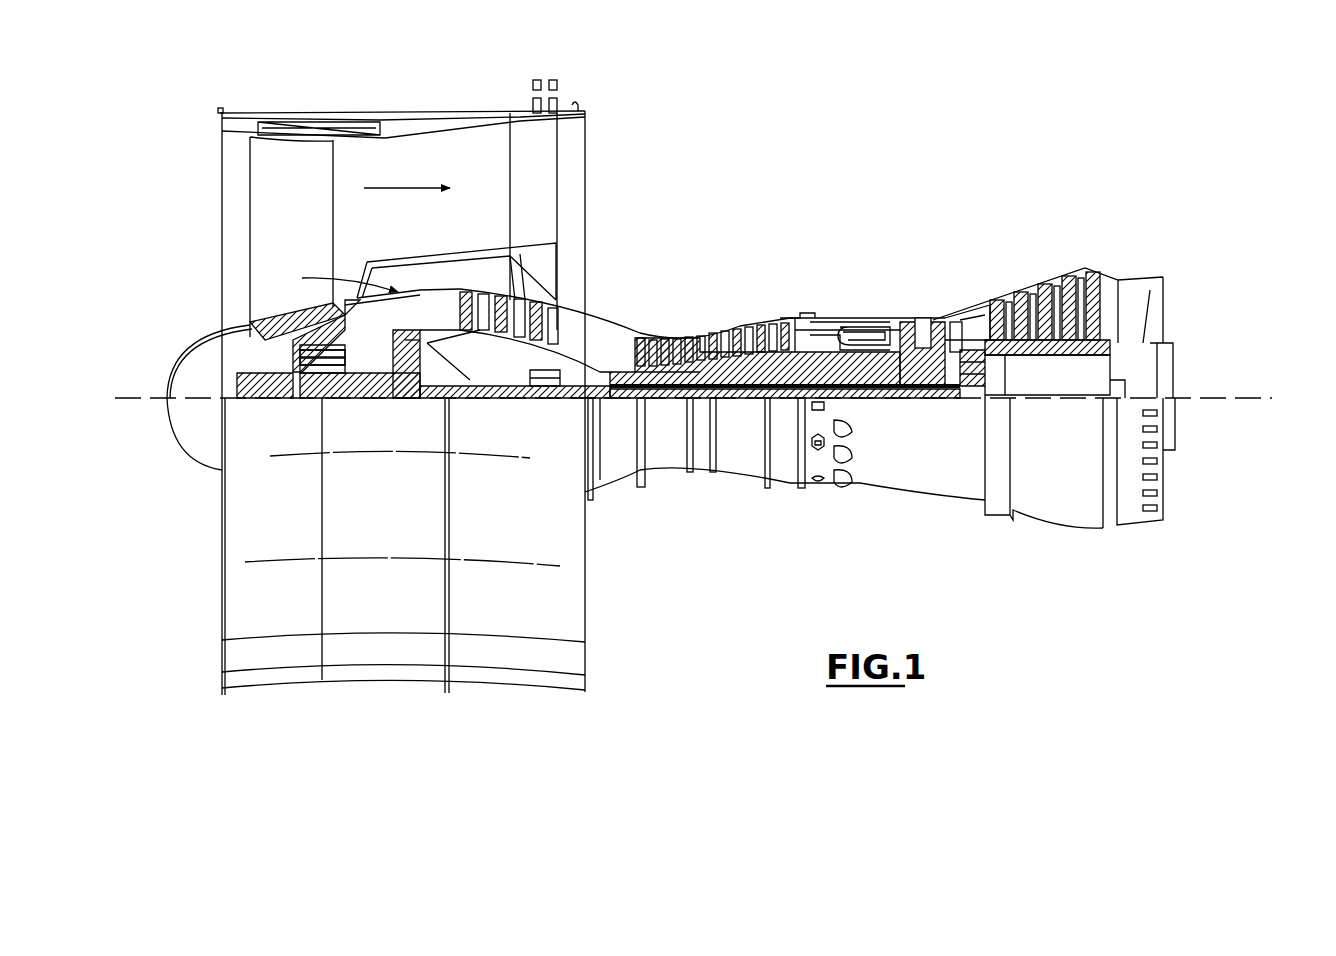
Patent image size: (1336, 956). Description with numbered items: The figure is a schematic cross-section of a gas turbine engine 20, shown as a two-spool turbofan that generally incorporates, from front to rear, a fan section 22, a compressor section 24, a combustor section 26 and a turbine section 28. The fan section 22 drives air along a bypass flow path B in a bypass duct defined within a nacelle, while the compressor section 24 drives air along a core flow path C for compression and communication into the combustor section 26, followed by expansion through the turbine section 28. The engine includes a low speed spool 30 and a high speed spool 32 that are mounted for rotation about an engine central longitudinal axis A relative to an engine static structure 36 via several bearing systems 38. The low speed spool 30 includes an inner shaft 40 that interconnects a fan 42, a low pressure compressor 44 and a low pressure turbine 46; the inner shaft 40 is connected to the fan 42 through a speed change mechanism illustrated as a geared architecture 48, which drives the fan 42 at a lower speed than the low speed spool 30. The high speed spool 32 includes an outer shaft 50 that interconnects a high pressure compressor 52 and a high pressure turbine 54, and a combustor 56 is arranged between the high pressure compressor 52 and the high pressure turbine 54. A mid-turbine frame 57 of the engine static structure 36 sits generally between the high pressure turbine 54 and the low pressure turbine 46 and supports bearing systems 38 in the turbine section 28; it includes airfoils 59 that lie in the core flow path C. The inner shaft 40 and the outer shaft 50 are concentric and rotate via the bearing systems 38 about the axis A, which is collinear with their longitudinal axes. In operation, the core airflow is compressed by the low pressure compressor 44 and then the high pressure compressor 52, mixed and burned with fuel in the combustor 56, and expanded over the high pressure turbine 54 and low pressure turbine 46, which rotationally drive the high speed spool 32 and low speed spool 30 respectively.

The gas turbine engine 20 is at (862, 162).
The fan section 22 is at (430, 87).
The compressor section 24 is at (443, 232).
The combustor section 26 is at (895, 232).
The turbine section 28 is at (1117, 232).
The low speed spool 30 is at (742, 402).
The high speed spool 32 is at (783, 360).
The engine static structure 36 is at (782, 482).
The bearing systems 38 is at (300, 374).
The inner shaft 40 is at (604, 400).
The fan 42 is at (306, 240).
The low pressure compressor 44 is at (520, 300).
The low pressure turbine 46 is at (1050, 277).
The geared architecture 48 is at (410, 380).
The outer shaft 50 is at (868, 392).
The high pressure compressor 52 is at (717, 375).
The high pressure turbine 54 is at (923, 318).
The combustor 56 is at (857, 340).
The mid-turbine frame 57 is at (965, 308).
The airfoils 59 is at (988, 392).
The engine central longitudinal axis A is at (1250, 397).
The bypass flow path B is at (398, 188).
The core flow path C is at (340, 279).